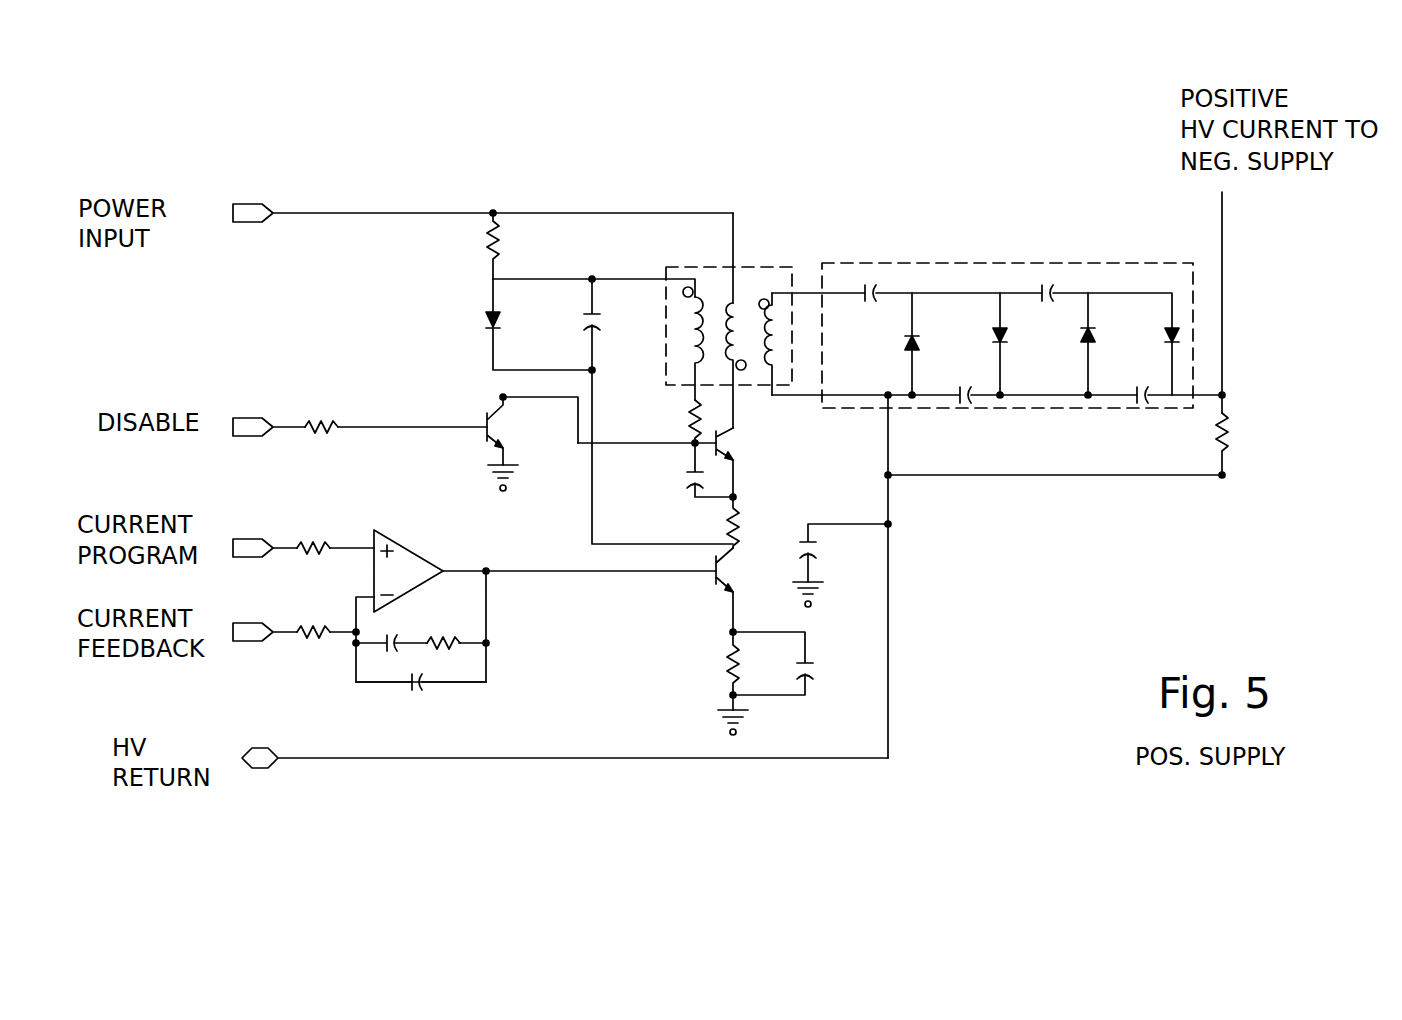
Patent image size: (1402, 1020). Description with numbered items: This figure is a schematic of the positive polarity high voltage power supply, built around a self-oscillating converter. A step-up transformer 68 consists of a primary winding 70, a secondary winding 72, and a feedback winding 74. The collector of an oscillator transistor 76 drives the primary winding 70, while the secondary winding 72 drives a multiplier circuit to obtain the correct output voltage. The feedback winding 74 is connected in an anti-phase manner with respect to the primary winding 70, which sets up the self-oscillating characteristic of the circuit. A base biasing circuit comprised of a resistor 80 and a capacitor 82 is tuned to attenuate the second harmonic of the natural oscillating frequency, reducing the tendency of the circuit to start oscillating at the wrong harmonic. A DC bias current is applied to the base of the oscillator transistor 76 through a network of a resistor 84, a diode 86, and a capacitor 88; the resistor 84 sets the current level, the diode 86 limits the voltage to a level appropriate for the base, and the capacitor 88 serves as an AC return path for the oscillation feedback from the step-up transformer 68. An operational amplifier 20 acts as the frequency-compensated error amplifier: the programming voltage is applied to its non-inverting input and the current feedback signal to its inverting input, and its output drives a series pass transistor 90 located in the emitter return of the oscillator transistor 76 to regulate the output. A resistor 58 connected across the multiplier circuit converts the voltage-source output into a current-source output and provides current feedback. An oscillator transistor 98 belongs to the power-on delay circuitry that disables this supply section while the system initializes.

The operational amplifier 20 is at (410, 590).
The resistor 58 is at (1215, 428).
The step-up transformer 68 is at (675, 277).
The primary winding 70 is at (733, 325).
The secondary winding 72 is at (775, 338).
The feedback winding 74 is at (590, 283).
The oscillator transistor 76 is at (720, 437).
The resistor 80 is at (693, 428).
The capacitor 82 is at (702, 478).
The resistor 84 is at (490, 240).
The diode 86 is at (488, 317).
The capacitor 88 is at (590, 332).
The series pass transistor 90 is at (725, 580).
The oscillator transistor 98 is at (487, 437).